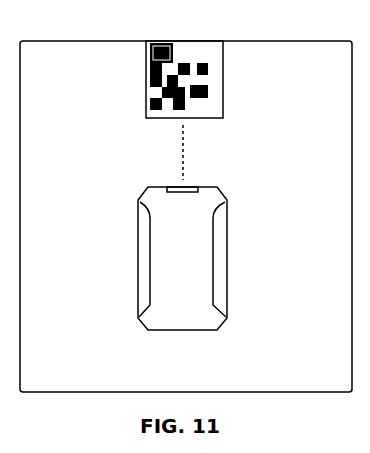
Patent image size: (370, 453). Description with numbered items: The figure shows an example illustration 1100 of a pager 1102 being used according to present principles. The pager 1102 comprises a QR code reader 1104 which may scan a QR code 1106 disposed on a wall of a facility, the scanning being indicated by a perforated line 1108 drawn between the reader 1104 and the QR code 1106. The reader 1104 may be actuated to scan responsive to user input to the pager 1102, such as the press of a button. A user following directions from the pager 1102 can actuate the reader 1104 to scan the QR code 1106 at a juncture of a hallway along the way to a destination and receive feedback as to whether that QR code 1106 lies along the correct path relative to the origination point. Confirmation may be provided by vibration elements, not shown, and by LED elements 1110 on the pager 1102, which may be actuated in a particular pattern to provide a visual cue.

The example illustration 1100 is at (281, 41).
The pager 1102 is at (183, 331).
The QR code reader 1104 is at (193, 187).
The QR code 1106 is at (224, 113).
The perforated line 1108 is at (183, 149).
The LED elements 1110 is at (143, 227).